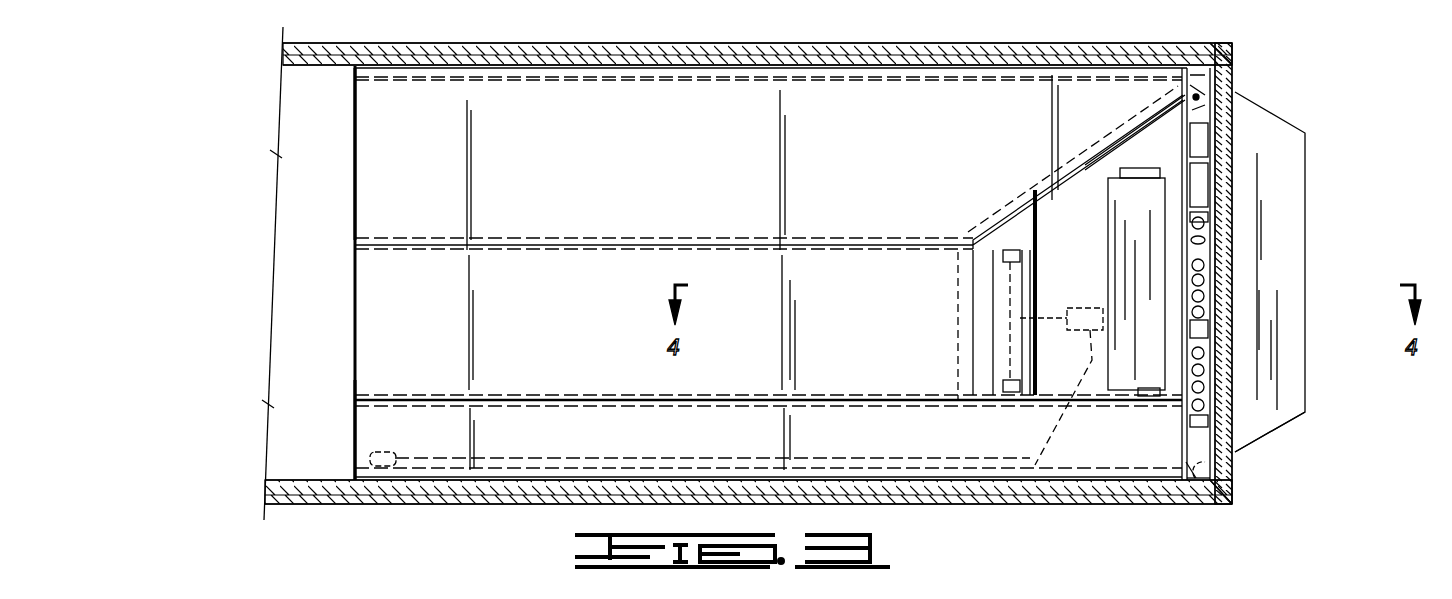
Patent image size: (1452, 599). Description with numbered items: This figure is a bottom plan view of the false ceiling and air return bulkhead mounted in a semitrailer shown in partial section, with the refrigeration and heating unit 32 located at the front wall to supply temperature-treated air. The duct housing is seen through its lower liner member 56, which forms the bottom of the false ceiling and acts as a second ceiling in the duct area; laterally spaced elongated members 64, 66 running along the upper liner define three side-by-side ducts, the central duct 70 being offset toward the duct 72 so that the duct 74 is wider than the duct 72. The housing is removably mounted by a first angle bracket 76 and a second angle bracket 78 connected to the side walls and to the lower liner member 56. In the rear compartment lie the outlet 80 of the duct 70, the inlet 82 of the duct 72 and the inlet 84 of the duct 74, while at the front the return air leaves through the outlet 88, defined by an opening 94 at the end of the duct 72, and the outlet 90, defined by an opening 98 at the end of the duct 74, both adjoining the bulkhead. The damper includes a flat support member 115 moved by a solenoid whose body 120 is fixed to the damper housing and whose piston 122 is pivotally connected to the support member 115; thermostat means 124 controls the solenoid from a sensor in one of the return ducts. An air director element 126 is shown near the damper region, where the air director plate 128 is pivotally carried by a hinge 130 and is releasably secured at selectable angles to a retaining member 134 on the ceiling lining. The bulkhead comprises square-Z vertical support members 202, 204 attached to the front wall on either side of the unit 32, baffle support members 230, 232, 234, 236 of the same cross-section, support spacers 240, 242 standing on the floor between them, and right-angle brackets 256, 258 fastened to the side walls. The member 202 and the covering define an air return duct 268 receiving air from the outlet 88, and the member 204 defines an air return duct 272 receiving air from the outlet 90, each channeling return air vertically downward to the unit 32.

The refrigeration and heating unit 32 is at (1250, 118).
The lower liner member 56 is at (414, 93).
The elongated member 64 is at (612, 398).
The elongated member 66 is at (605, 240).
The central duct 70 is at (883, 322).
The duct 72 is at (883, 443).
The duct 74 is at (876, 157).
The first angle bracket 76 is at (465, 70).
The second angle bracket 78 is at (515, 480).
The outlet 80 is at (352, 296).
The inlet 82 is at (352, 424).
The inlet 84 is at (352, 118).
The outlet 88 is at (1207, 493).
The opening 94 is at (1207, 493).
The outlet 90 is at (1238, 50).
The opening 98 is at (1238, 50).
The support member 115 is at (1010, 283).
The body 120 is at (1085, 306).
The piston 122 is at (1056, 305).
The thermostat means 124 is at (392, 452).
The ramp 126 is at (1015, 232).
The plate 128 is at (1057, 215).
The hinge 130 is at (1037, 352).
The retaining member 134 is at (1135, 175).
The vertical support member 202 is at (1207, 420).
The vertical support member 204 is at (1235, 92).
The baffle support member 230 is at (1207, 400).
The baffle support member 232 is at (1207, 303).
The baffle support member 234 is at (1207, 240).
The baffle support member 236 is at (1200, 155).
The support spacer 240 is at (1207, 320).
The support spacer 242 is at (1207, 223).
The right-angle bracket 256 is at (1185, 455).
The right-angle bracket 258 is at (1183, 90).
The air return duct 268 is at (1203, 442).
The air return duct 272 is at (1198, 118).